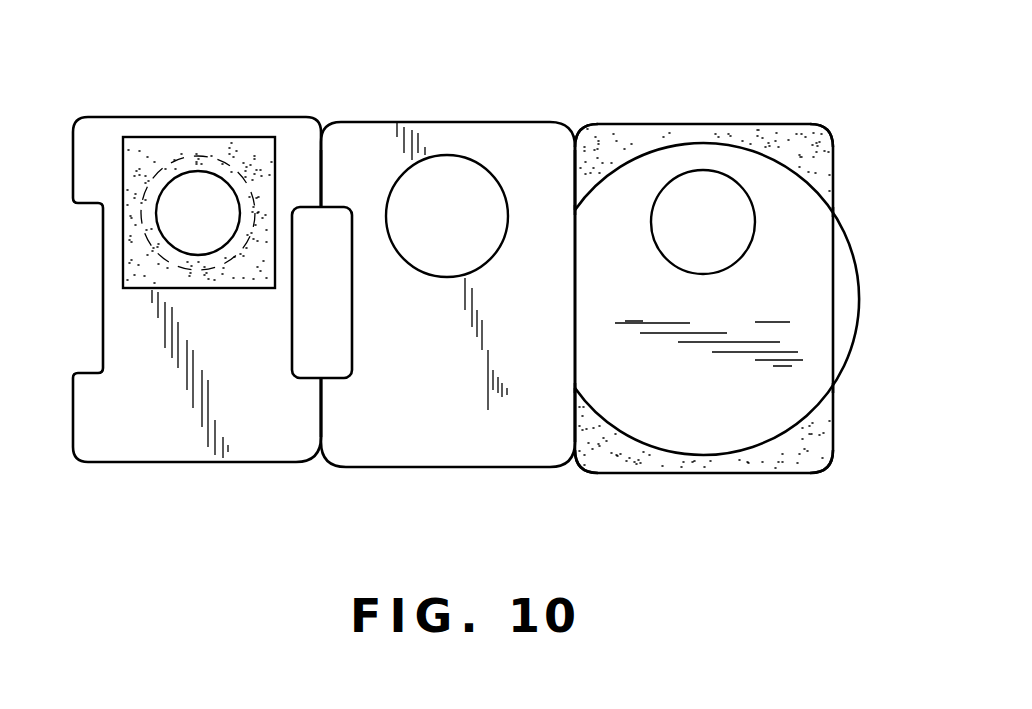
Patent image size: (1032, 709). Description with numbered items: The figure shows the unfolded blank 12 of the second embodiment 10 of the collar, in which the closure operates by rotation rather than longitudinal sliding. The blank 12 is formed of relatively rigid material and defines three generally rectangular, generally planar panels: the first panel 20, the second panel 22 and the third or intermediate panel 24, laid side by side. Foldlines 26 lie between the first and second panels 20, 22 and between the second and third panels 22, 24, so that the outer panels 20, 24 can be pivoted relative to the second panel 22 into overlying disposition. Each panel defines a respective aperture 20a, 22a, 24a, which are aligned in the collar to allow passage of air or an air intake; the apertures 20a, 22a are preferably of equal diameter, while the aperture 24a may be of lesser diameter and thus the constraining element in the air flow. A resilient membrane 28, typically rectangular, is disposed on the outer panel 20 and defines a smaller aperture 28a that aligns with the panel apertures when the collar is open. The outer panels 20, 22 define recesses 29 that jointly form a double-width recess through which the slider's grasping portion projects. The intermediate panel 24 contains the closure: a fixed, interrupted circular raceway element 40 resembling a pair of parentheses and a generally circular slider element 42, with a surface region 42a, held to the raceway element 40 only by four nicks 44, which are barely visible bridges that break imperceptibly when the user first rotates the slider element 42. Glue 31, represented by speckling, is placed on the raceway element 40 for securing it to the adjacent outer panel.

The second embodiment 10 is at (160, 84).
The blank 12 is at (465, 88).
The first panel 20 is at (192, 465).
The aperture 20a is at (212, 155).
The second panel 22 is at (418, 470).
The aperture 22a is at (478, 238).
The third or intermediate panel 24 is at (650, 473).
The aperture 24a is at (740, 243).
The foldlines 26 is at (322, 190).
The resilient membrane 28 is at (122, 240).
The aperture 28a is at (225, 232).
The recesses 29 is at (103, 270).
The glue 31 is at (628, 137).
The raceway element 40 is at (835, 148).
The slider element 42 is at (717, 299).
The disc surface 42a is at (575, 272).
The nicks 44 is at (575, 212).